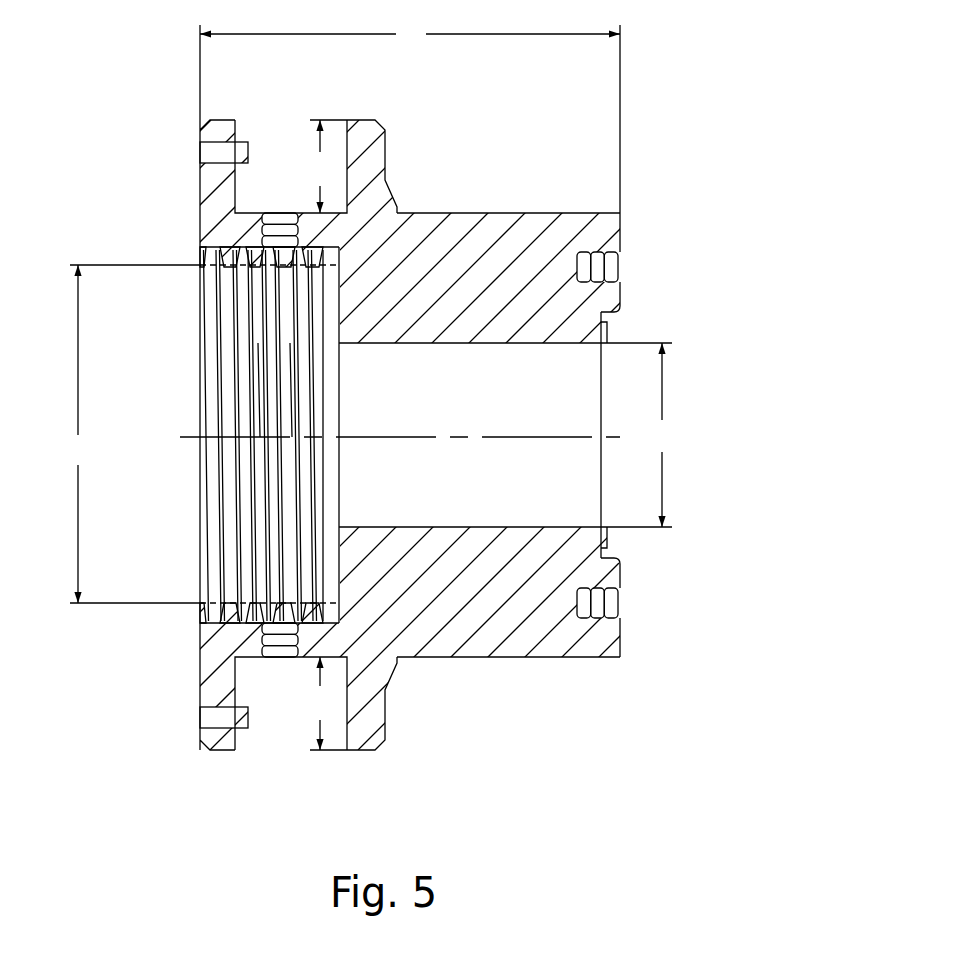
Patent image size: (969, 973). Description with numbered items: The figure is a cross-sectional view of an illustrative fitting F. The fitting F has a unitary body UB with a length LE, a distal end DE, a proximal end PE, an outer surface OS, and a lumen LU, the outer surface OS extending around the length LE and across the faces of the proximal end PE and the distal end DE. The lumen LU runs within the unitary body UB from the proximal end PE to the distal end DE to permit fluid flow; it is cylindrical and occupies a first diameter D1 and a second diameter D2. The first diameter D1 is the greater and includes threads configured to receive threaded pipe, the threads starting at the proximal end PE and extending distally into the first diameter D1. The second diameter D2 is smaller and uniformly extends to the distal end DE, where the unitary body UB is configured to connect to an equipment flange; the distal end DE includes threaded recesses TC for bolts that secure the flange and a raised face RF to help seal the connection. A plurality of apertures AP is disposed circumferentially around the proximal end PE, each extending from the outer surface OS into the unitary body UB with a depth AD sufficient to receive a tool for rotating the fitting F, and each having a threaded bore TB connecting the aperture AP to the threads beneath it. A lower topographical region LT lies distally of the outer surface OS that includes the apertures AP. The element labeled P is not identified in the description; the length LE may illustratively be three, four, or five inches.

The fitting F is at (636, 157).
The length LE is at (410, 116).
The pin / peg P is at (248, 136).
The apertures AP is at (283, 126).
The depth AD is at (327, 435).
The threaded bore TB is at (276, 214).
The lower topographical region LT is at (460, 209).
The threaded recesses TC is at (618, 262).
The distal end DE is at (660, 299).
The raised face RF is at (608, 334).
The proximal end PE is at (180, 350).
The first diameter D1 is at (204, 434).
The lumen LU is at (565, 425).
The second diameter D2 is at (641, 435).
The outer surface OS is at (554, 663).
The unitary body UB is at (631, 692).